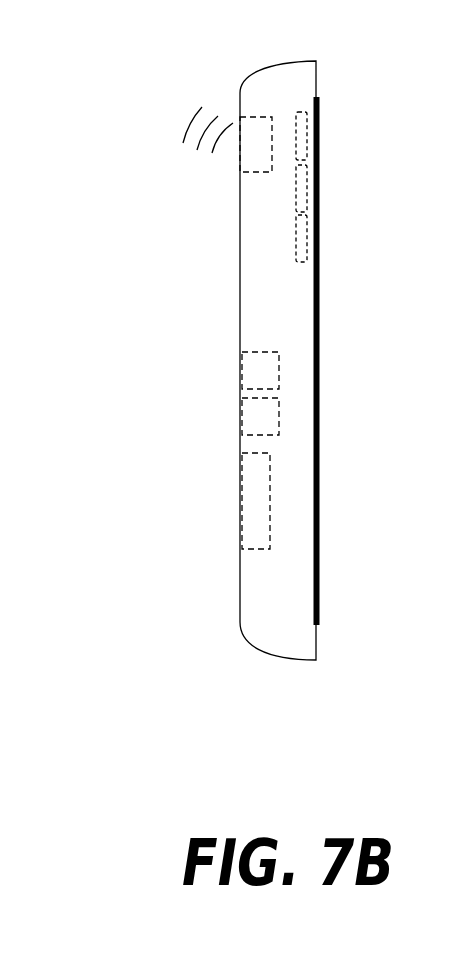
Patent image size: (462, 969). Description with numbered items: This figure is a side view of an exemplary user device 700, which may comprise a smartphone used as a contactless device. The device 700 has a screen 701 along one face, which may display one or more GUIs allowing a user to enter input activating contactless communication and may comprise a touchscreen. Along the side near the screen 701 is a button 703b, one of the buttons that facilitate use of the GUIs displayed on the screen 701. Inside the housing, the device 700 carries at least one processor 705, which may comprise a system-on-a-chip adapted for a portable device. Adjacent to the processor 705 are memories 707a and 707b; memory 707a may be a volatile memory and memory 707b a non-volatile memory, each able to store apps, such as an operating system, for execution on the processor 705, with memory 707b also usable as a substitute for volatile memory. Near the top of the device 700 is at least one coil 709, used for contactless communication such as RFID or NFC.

The user device 700 is at (268, 33).
The screen 701 is at (319, 233).
The button 703b is at (302, 135).
The processor 705 is at (250, 505).
The memory 707a is at (250, 362).
The memory 707b is at (250, 410).
The coil 709 is at (252, 157).